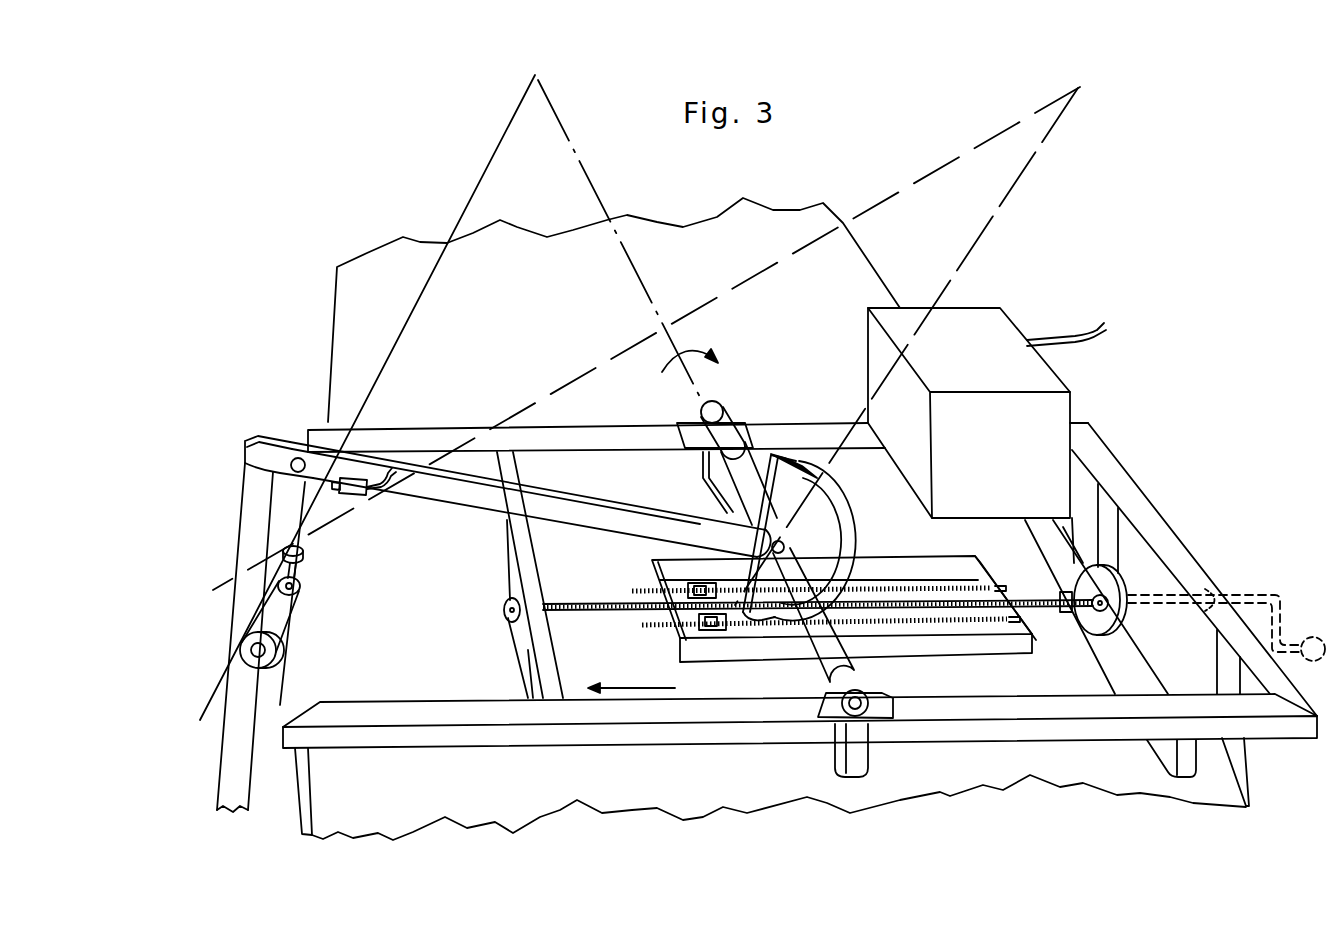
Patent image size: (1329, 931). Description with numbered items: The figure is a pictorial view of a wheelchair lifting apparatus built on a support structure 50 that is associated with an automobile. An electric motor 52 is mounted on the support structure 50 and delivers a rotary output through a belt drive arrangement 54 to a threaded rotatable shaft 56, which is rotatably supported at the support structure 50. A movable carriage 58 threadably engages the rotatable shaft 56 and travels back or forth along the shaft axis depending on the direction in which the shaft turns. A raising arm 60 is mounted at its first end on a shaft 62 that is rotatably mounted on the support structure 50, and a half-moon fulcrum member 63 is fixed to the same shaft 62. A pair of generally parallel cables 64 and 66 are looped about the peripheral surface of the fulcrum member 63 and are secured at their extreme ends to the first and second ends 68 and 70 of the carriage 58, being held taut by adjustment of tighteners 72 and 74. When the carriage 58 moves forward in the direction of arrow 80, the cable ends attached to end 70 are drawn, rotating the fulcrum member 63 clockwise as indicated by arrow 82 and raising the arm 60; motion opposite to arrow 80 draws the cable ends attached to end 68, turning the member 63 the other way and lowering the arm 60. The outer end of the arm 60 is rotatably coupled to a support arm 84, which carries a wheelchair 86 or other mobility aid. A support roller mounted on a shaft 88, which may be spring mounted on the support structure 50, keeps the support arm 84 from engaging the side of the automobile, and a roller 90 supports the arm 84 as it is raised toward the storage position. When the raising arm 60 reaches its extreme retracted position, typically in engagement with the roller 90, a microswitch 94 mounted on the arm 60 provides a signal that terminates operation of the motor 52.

The support structure 50 is at (470, 718).
The electric motor 52 is at (960, 318).
The belt drive arrangement 54 is at (1116, 586).
The threaded rotatable shaft 56 is at (1040, 596).
The movable carriage 58 is at (876, 563).
The raising arm 60 is at (590, 512).
The shaft 62 is at (741, 462).
The half-moon fulcrum member 63 is at (825, 491).
The cable 64 is at (945, 620).
The cable 66 is at (918, 583).
The first end of movable carriage 68 is at (976, 566).
The second end of movable carriage 70 is at (678, 640).
The tightener 72 is at (702, 585).
The tightener 74 is at (721, 631).
The arrow 80 is at (625, 690).
The arrow 82 is at (693, 348).
The support arm 84 is at (245, 514).
The wheelchair 86 is at (250, 648).
The shaft 88 is at (284, 629).
The roller 90 is at (300, 574).
The microswitch 94 is at (351, 478).